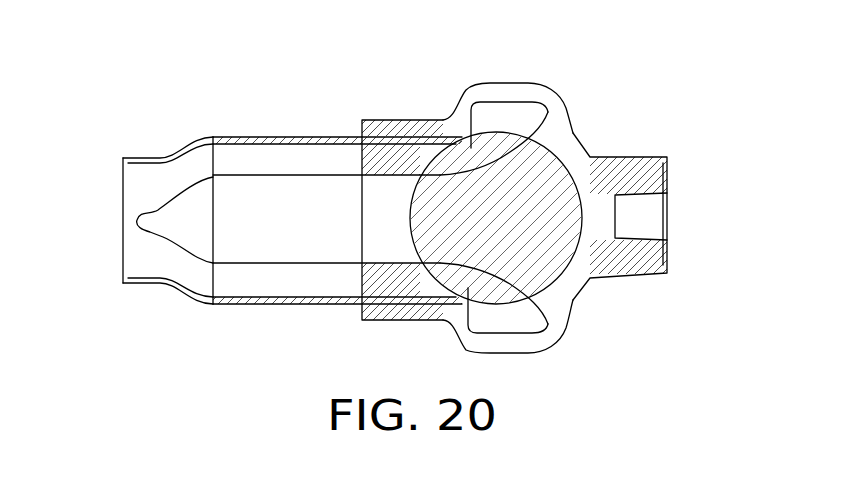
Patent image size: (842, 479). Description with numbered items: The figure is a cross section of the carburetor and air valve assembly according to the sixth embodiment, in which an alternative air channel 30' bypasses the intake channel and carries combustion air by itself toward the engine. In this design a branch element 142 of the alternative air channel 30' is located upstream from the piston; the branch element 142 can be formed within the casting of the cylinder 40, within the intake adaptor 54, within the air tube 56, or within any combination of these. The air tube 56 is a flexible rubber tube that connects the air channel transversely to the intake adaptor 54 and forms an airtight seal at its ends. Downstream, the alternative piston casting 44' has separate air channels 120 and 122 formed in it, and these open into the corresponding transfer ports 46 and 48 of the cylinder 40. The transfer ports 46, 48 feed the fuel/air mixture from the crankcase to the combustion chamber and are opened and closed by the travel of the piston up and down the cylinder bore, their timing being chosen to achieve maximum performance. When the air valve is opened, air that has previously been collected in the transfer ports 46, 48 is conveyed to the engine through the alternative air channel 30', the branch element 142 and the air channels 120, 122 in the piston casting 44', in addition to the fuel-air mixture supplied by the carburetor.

The alternative air channel 30' is at (126, 220).
The branch element 142 is at (140, 216).
The air tube 56 is at (192, 207).
The intake adaptor 54 is at (285, 196).
The cylinder 40 is at (380, 198).
The air channel 120 is at (471, 148).
The air channel 122 is at (477, 290).
The transfer port 46 is at (517, 115).
The transfer port 48 is at (513, 328).
The alternative piston casting 44' is at (543, 235).